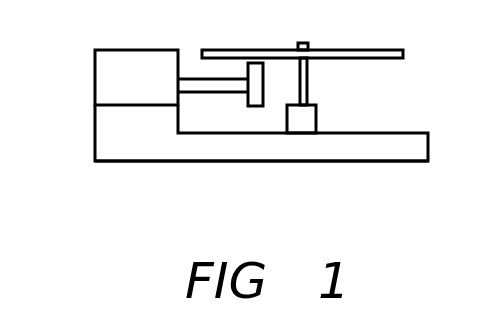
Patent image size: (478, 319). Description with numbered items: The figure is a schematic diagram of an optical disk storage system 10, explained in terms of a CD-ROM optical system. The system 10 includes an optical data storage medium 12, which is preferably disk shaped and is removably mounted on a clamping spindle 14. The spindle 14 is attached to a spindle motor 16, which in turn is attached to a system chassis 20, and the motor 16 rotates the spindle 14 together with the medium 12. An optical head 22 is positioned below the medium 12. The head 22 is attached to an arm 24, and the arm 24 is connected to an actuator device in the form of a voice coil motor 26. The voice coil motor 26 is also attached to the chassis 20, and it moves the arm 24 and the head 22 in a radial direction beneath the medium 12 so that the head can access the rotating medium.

The optical disk storage system 10 is at (128, 190).
The optical data storage medium 12 is at (386, 50).
The clamping spindle 14 is at (307, 72).
The spindle motor 16 is at (316, 118).
The system chassis 20 is at (395, 162).
The optical head 22 is at (253, 63).
The arm 24 is at (184, 78).
The voice coil motor 26 is at (104, 52).